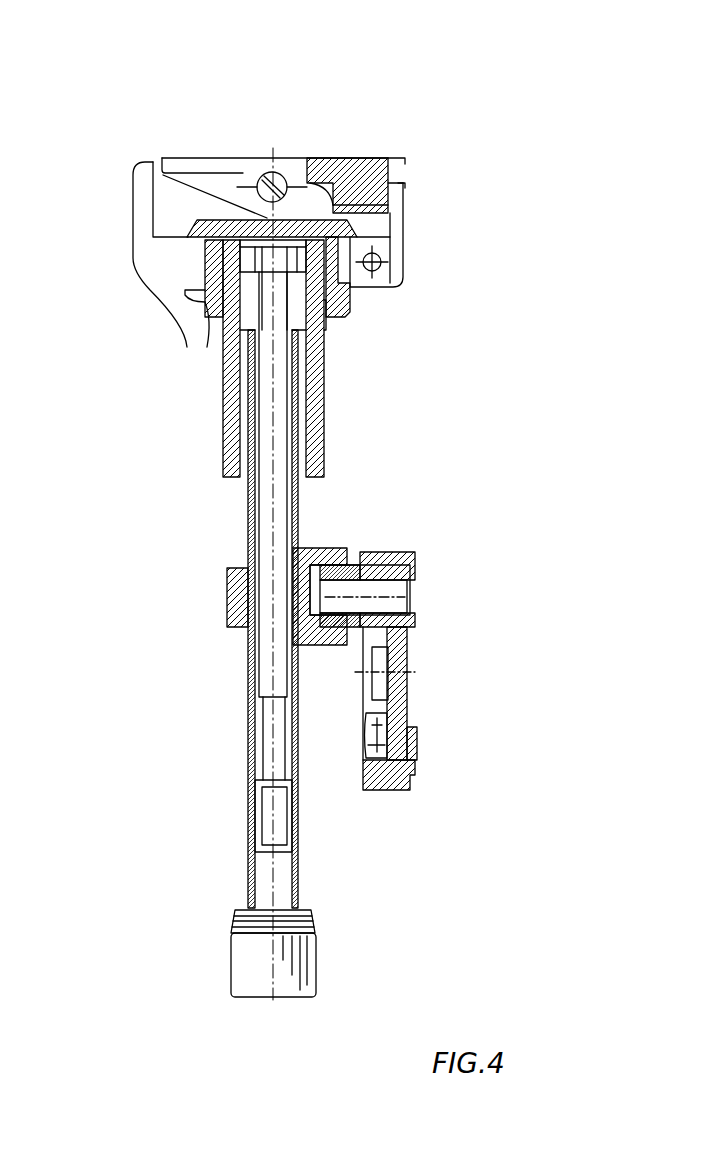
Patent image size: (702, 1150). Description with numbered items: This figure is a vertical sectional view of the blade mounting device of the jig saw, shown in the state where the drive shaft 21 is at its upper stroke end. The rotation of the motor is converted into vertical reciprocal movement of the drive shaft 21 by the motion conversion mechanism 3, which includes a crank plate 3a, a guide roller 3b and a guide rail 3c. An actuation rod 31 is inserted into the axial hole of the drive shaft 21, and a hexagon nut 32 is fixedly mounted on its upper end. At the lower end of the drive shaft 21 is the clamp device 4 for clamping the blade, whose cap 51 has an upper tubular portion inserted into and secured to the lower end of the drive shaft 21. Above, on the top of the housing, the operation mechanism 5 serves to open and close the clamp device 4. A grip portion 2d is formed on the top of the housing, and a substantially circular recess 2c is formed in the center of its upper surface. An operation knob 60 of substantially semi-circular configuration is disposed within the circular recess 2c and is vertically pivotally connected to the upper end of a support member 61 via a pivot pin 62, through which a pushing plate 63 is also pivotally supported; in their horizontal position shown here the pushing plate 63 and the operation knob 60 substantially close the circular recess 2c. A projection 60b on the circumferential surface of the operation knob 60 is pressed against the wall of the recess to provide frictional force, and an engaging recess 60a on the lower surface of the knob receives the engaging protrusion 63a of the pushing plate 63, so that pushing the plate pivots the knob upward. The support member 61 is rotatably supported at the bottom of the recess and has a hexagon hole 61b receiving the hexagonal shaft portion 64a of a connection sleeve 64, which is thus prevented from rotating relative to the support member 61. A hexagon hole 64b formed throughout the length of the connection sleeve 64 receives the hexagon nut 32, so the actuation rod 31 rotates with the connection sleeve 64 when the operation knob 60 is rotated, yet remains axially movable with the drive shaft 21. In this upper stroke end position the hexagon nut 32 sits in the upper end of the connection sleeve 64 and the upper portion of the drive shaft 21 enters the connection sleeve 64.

The circular recess 2c is at (162, 158).
The grip portion 2d is at (130, 233).
The motion conversion mechanism 3 is at (360, 525).
The crank plate 3a is at (417, 565).
The guide roller 3b is at (357, 630).
The guide rail 3c is at (327, 645).
The clamp device 4 is at (340, 930).
The operation mechanism 5 is at (397, 122).
The drive shaft 21 is at (248, 510).
The actuation rod 31 is at (270, 455).
The hexagon nut 32 is at (245, 355).
The cap 51 is at (247, 953).
The operation knob 60 is at (330, 160).
The engaging recess 60a is at (388, 173).
The projection 60b is at (402, 183).
The support member 61 is at (203, 233).
The hexagon hole 61b is at (200, 297).
The pivot pin 62 is at (265, 167).
The pushing plate 63 is at (185, 165).
The engaging protrusion 63a is at (390, 207).
The connection sleeve 64 is at (323, 387).
The hexagonal shaft portion 64a is at (340, 283).
The hexagon hole 64b is at (325, 323).